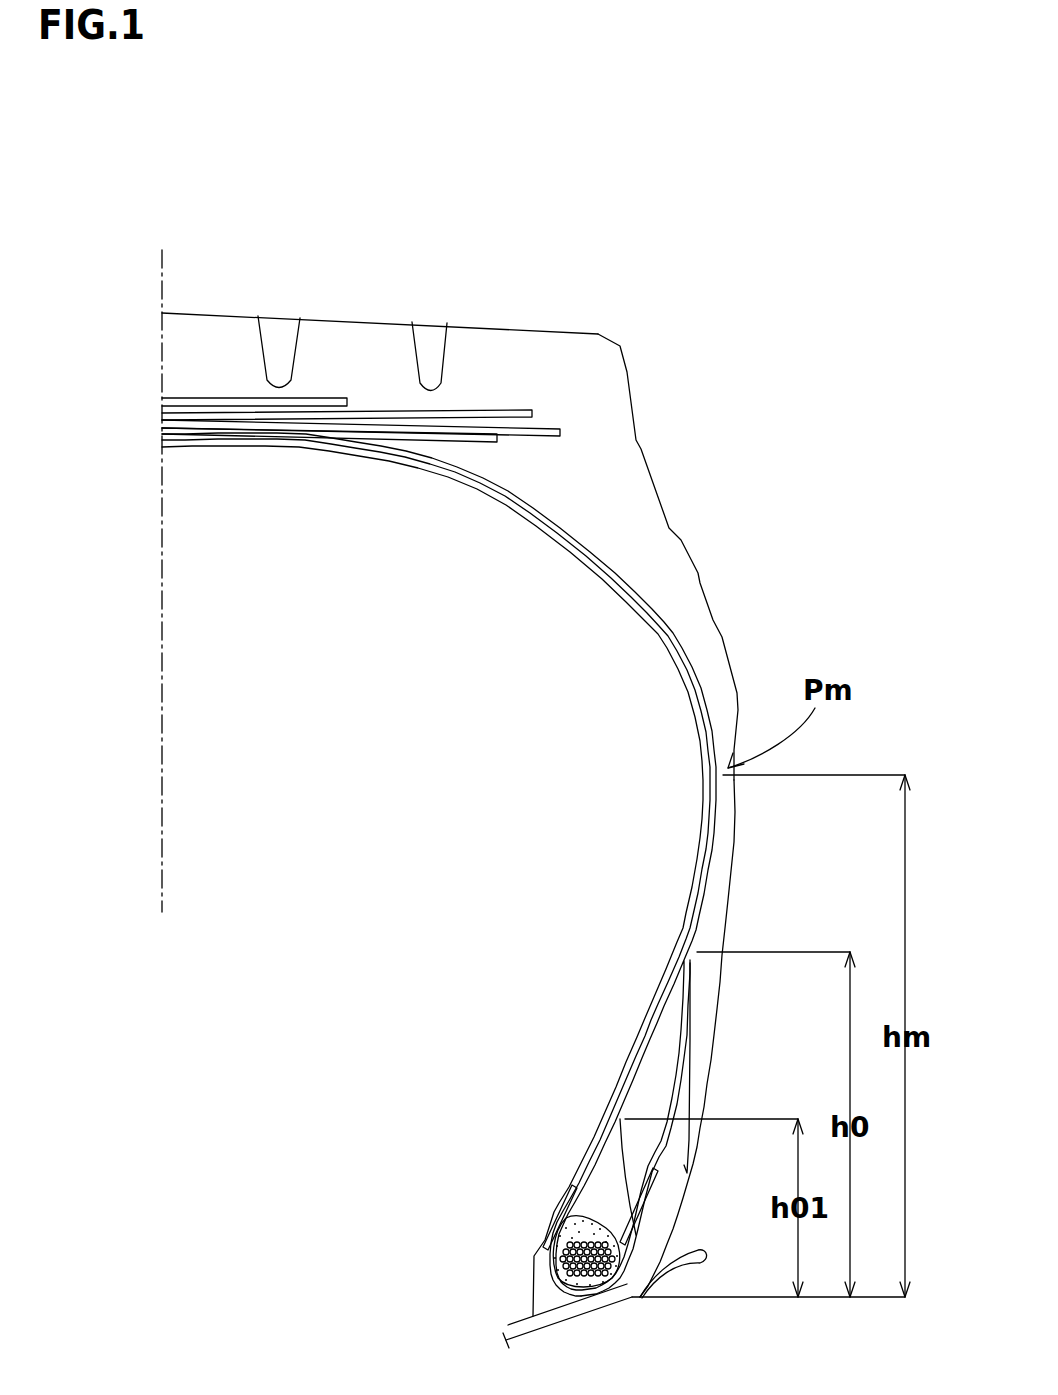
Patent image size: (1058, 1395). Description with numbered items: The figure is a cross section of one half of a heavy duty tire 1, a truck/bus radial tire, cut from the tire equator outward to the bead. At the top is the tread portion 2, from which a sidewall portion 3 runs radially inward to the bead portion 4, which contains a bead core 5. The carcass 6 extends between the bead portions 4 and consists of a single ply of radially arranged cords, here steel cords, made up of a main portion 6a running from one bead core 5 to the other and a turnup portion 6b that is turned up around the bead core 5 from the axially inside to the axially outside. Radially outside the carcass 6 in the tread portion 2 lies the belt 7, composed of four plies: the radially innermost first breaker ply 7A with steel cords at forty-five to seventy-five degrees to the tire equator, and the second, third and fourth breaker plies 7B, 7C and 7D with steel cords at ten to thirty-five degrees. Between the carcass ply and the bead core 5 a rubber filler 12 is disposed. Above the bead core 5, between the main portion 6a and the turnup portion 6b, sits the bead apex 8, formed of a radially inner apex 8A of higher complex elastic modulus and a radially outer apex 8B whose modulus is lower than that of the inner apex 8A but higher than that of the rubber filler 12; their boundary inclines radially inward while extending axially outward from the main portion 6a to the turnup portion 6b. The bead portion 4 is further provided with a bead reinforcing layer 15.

The heavy duty tire 1 is at (678, 468).
The tread portion 2 is at (360, 345).
The sidewall portion 3 is at (752, 656).
The bead portion 4 is at (495, 1300).
The bead core 5 is at (565, 1263).
The carcass 6 is at (708, 870).
The main portion 6a is at (708, 845).
The turnup portion 6b is at (598, 1185).
The belt 7 is at (66, 362).
The first breaker ply 7A is at (162, 442).
The second breaker ply 7B is at (162, 428).
The third breaker ply 7C is at (162, 414).
The fourth breaker ply 7D is at (162, 399).
The bead apex 8 is at (458, 1000).
The radially inner apex 8A is at (600, 1160).
The radially outer apex 8B is at (663, 1070).
The rubber filler 12 is at (560, 1220).
The bead reinforcing layer 15 is at (650, 1207).